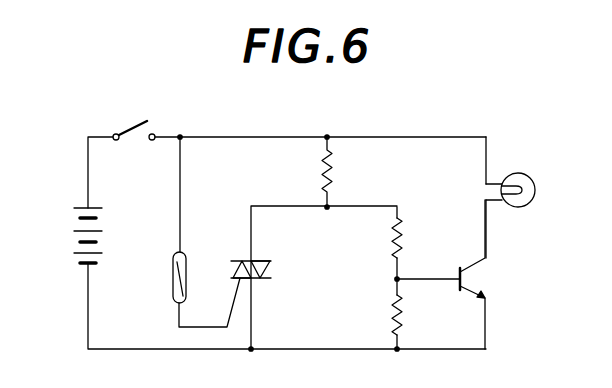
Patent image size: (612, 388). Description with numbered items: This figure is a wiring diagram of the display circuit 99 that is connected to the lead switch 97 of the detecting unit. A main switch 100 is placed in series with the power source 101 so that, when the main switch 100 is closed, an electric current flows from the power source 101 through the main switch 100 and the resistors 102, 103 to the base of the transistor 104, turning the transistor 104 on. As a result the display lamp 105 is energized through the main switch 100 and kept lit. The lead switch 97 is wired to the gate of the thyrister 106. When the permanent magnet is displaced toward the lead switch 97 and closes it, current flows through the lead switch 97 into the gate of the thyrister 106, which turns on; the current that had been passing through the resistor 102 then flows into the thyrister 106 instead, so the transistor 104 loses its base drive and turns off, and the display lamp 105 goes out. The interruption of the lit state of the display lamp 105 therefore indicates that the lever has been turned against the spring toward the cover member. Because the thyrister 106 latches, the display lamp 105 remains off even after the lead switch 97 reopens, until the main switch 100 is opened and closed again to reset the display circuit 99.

The display circuit 99 is at (425, 131).
The main switch 100 is at (146, 120).
The power source 101 is at (86, 206).
The lead switch 97 is at (187, 258).
The thyrister 106 is at (256, 261).
The resistor 102 is at (331, 163).
The resistor 103 is at (405, 226).
The transistor 104 is at (489, 280).
The display lamp 105 is at (540, 188).